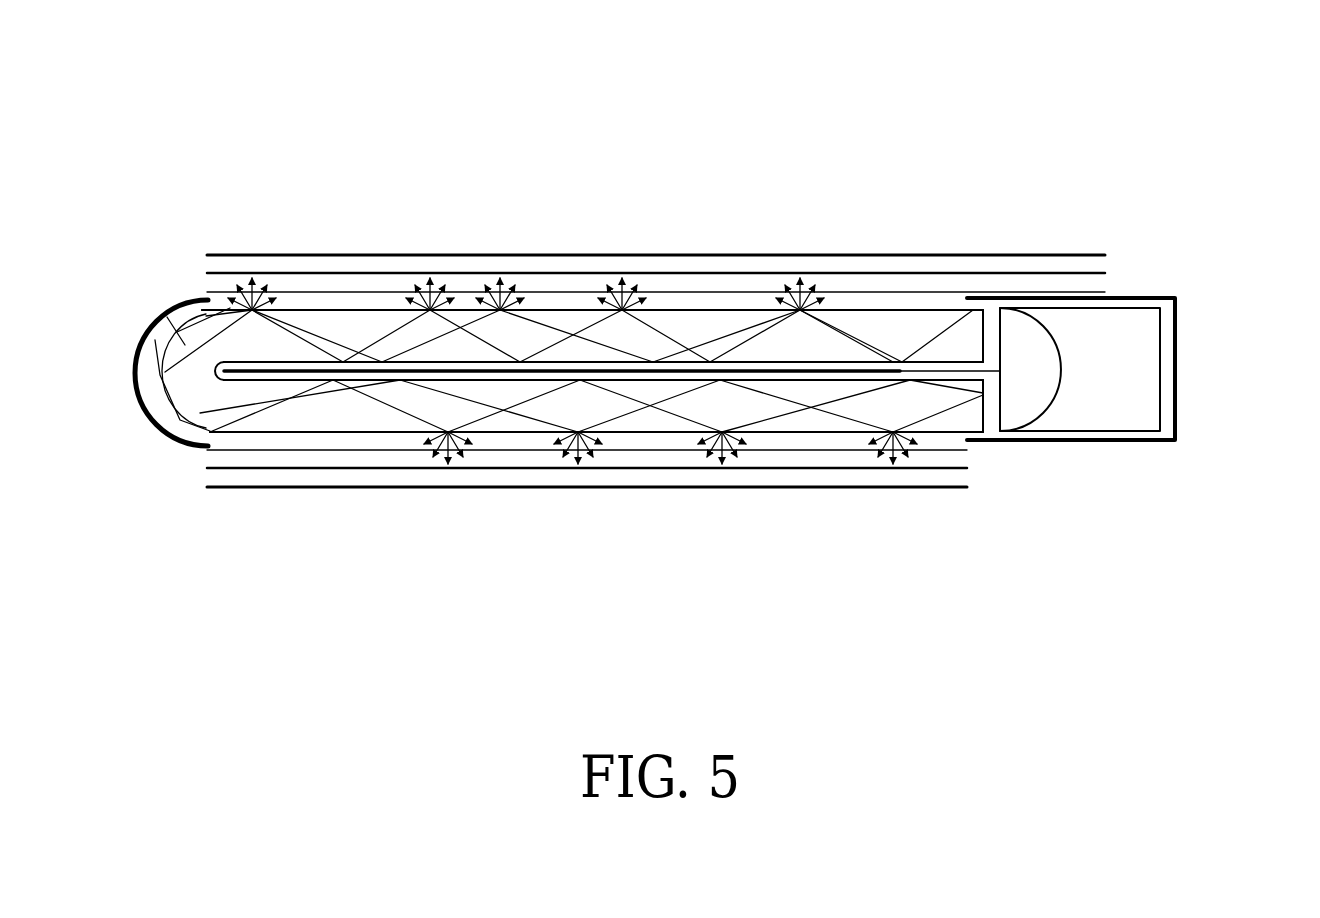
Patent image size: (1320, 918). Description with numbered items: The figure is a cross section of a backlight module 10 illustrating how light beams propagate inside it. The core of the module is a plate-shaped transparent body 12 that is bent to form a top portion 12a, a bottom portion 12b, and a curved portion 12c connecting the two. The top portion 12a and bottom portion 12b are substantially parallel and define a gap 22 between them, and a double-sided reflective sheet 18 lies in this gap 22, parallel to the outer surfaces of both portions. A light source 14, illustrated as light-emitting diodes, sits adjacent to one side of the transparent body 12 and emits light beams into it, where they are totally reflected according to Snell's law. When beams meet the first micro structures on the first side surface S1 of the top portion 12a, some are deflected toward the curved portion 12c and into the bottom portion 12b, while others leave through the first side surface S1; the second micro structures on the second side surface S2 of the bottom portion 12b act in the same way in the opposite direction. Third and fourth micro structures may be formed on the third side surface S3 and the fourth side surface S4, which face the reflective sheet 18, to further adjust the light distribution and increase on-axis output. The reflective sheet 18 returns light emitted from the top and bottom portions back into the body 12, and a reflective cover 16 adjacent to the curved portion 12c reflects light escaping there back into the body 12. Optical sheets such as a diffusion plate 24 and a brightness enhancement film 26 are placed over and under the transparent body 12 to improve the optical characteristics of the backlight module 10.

The backlight module 10 is at (1020, 56).
The plate-shaped transparent body 12 is at (505, 344).
The top portion 12a is at (355, 328).
The bottom portion 12b is at (514, 426).
The curved portion 12c is at (186, 346).
The light source 14 is at (1177, 362).
The reflective cover 16 is at (137, 396).
The double-sided reflective sheet 18 is at (565, 371).
The gap 22 is at (231, 381).
The diffusion plate 24 is at (1105, 273).
The brightness enhancement film 26 is at (1105, 254).
The first side surface S1 is at (863, 307).
The second side surface S2 is at (835, 432).
The third side surface S3 is at (937, 364).
The fourth side surface S4 is at (963, 380).